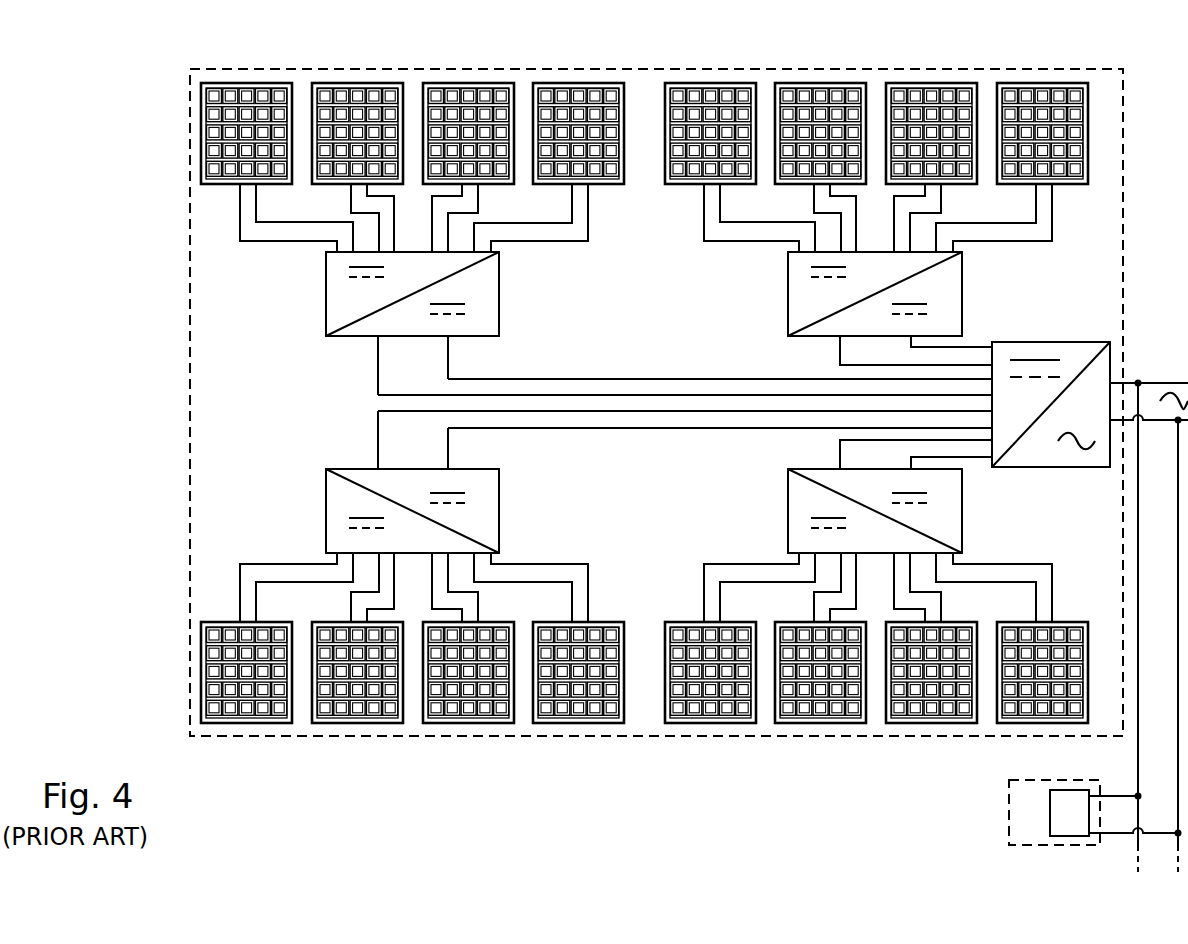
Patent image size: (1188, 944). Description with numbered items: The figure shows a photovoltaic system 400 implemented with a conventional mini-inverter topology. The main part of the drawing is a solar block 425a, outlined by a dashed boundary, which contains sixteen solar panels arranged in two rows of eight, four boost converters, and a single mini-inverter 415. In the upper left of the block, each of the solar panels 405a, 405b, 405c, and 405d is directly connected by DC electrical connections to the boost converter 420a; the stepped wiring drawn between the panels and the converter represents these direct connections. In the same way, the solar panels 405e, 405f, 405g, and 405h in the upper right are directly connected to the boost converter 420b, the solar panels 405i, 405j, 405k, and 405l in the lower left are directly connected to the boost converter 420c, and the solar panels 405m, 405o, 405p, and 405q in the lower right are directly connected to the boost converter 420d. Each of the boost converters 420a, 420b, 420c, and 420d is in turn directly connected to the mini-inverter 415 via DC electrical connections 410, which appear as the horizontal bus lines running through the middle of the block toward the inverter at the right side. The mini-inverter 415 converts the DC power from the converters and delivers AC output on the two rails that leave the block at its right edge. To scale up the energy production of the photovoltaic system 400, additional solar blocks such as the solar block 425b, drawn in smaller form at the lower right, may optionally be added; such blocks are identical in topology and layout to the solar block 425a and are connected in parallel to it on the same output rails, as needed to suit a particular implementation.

The photovoltaic system 400 is at (220, 56).
The solar panel 405a is at (243, 83).
The solar panel 405b is at (354, 83).
The solar panel 405c is at (465, 83).
The solar panel 405d is at (575, 83).
The solar panel 405e is at (707, 83).
The solar panel 405f is at (817, 83).
The solar panel 405g is at (928, 83).
The solar panel 405h is at (1039, 83).
The solar panel 405i is at (227, 723).
The solar panel 405j is at (338, 723).
The solar panel 405k is at (449, 723).
The solar panel 405l is at (559, 723).
The solar panel 405m is at (691, 723).
The solar panel 405o is at (801, 723).
The solar panel 405p is at (912, 723).
The solar panel 405q is at (1023, 723).
The DC electrical connections 410 is at (410, 424).
The mini-inverter 415 is at (1025, 342).
The boost converter 420a is at (499, 311).
The boost converter 420b is at (788, 309).
The boost converter 420c is at (499, 528).
The boost converter 420d is at (788, 528).
The solar block 425a is at (190, 178).
The solar block 425b is at (1009, 801).